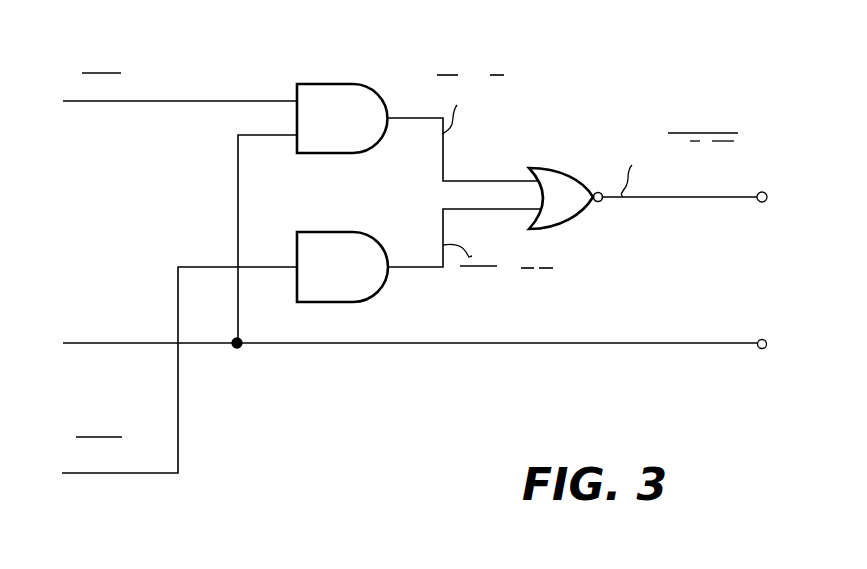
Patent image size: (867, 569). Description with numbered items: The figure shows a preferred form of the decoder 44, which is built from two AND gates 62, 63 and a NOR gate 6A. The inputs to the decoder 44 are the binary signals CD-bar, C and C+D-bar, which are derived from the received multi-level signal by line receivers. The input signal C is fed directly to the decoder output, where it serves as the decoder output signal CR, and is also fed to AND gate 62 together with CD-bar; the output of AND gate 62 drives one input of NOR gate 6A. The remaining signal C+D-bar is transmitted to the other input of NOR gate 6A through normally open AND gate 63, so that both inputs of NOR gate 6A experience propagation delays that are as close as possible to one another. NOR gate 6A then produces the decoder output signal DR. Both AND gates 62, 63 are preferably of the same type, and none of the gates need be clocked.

The decoder 44 is at (647, 61).
The AND gate 62 is at (337, 84).
The AND gate 63 is at (380, 293).
The NOR gate 6A is at (565, 168).